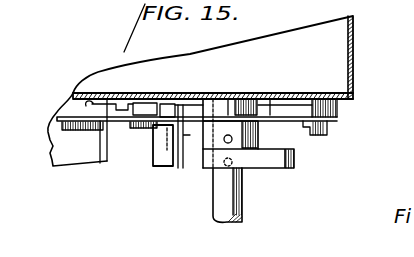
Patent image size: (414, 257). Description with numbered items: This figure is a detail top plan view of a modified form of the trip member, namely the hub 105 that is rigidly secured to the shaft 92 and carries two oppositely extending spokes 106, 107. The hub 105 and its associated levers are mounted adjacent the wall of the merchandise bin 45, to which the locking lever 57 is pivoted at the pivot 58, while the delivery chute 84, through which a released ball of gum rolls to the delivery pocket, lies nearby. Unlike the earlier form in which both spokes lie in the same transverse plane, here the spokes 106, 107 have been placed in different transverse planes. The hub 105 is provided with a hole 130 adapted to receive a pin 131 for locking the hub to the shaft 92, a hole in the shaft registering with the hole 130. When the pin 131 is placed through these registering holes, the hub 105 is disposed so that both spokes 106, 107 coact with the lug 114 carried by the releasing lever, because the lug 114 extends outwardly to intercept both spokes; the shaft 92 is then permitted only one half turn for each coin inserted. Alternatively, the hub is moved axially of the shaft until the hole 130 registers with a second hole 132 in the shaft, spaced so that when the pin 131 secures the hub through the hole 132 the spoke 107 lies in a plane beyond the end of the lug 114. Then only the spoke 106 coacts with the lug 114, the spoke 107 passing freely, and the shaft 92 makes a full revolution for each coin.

The merchandise bin 45 is at (349, 44).
The locking lever 57 is at (123, 122).
The pivot 58 is at (325, 135).
The chute 84 is at (95, 153).
The shaft 92 is at (240, 208).
The hub 105 is at (207, 165).
The spoke 106 is at (180, 151).
The spoke 107 is at (294, 165).
The lug 114 is at (156, 153).
The hole 130 is at (240, 130).
The pin 131 is at (227, 135).
The second hole 132 is at (245, 177).